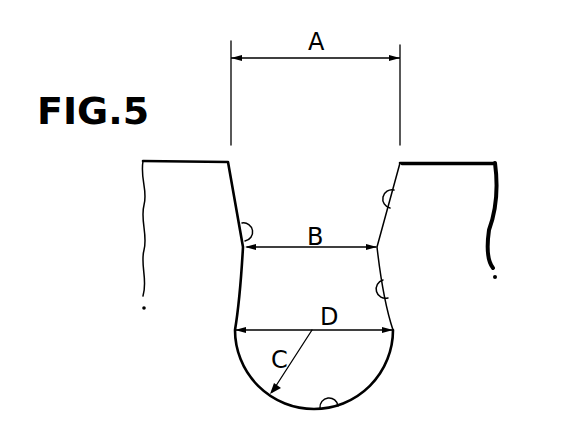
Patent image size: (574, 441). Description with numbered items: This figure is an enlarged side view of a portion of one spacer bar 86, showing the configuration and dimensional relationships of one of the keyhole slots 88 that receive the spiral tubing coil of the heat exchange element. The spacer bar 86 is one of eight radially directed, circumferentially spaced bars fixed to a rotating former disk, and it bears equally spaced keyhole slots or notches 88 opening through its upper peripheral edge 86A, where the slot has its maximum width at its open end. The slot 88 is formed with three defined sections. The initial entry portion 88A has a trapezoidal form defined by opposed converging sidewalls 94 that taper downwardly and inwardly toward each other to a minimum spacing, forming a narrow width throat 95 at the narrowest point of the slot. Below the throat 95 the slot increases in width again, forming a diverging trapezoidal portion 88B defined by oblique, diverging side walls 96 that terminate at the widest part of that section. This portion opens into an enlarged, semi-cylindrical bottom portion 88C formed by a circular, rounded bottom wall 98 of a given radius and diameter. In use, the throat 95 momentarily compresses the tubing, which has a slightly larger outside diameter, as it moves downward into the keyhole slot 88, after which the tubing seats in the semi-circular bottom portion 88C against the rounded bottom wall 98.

The spacer bar 86 is at (481, 219).
The upper peripheral edge 86A is at (432, 162).
The keyhole slot 88 is at (301, 140).
The entry portion 88A is at (350, 208).
The diverging trapezoidal portion 88B is at (348, 306).
The semi-cylindrical bottom portion 88C is at (367, 376).
The converging sidewalls 94 is at (389, 208).
The throat 95 is at (242, 222).
The diverging side walls 96 is at (389, 294).
The circular bottom wall 98 is at (338, 406).